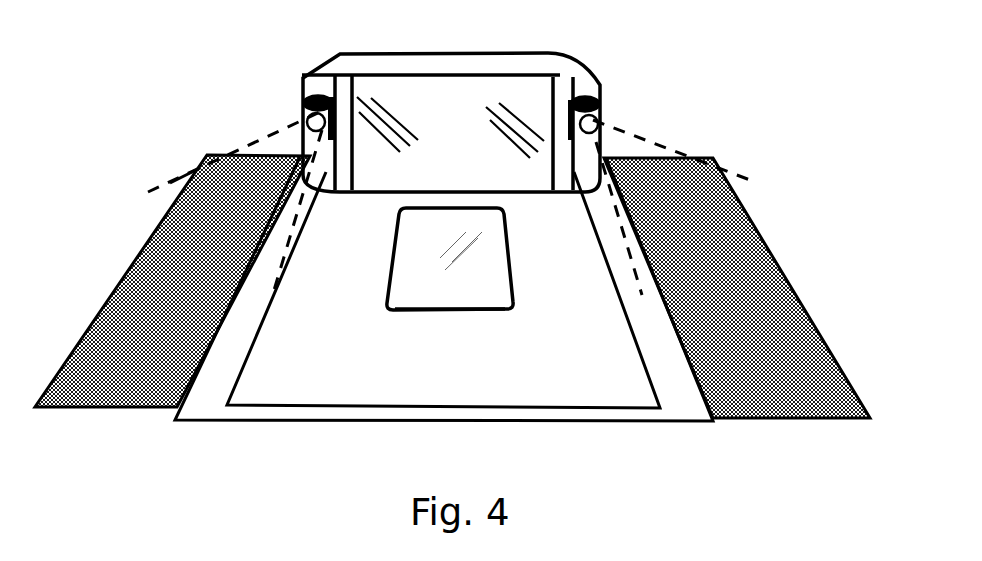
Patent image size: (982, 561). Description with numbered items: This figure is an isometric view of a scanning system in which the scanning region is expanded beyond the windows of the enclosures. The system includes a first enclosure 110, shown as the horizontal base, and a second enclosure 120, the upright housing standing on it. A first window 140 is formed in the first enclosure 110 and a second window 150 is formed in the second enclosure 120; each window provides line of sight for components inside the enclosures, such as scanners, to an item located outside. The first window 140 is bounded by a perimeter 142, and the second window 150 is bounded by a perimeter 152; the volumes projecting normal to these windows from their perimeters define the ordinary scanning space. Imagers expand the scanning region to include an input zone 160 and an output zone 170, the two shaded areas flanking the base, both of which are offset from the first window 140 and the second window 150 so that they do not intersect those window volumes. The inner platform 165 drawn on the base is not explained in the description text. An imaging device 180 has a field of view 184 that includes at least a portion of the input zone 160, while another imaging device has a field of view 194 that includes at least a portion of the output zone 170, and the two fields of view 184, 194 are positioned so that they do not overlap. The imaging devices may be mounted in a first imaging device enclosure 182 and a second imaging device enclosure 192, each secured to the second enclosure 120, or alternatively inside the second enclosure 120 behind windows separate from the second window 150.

The first enclosure 110 is at (580, 397).
The second enclosure 120 is at (395, 67).
The first window 140 is at (480, 273).
The perimeter of the first window 142 is at (428, 312).
The second window 150 is at (497, 92).
The perimeter of the second window 152 is at (418, 75).
The input zone 160 is at (300, 115).
The platform 165 is at (350, 237).
The output zone 170 is at (133, 263).
The imaging device 180 is at (597, 117).
The first imaging device enclosure 182 is at (593, 92).
The field of view 184 is at (751, 172).
The second imaging device enclosure 192 is at (313, 97).
The field of view 194 is at (188, 174).